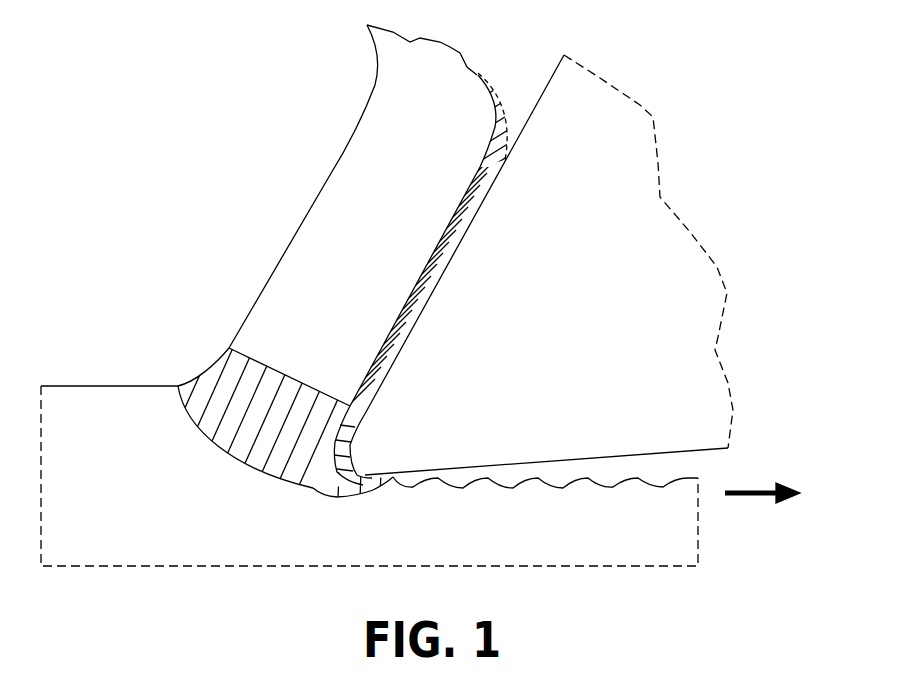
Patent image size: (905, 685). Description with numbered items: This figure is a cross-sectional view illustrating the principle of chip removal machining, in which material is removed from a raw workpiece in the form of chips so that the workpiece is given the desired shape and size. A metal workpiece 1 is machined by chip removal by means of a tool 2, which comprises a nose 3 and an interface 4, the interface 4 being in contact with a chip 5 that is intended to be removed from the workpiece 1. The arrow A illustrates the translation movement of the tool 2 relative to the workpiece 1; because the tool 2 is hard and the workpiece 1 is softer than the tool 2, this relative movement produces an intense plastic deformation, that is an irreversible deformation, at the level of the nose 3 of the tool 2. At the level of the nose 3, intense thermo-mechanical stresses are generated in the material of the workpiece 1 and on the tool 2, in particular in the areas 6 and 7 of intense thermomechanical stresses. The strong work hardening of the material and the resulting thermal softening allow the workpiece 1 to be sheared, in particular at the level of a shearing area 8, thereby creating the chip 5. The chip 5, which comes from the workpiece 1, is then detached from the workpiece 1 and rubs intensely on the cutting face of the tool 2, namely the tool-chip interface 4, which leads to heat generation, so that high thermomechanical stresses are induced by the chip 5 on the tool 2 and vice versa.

The metal workpiece 1 is at (93, 418).
The tool 2 is at (660, 303).
The nose 3 is at (353, 463).
The interface 4 is at (473, 217).
The chip 5 is at (427, 80).
The area of intense thermomechanical stresses 6 is at (420, 277).
The area of intense thermomechanical stresses 7 is at (313, 488).
The shearing area 8 is at (263, 412).
The arrow A is at (797, 487).